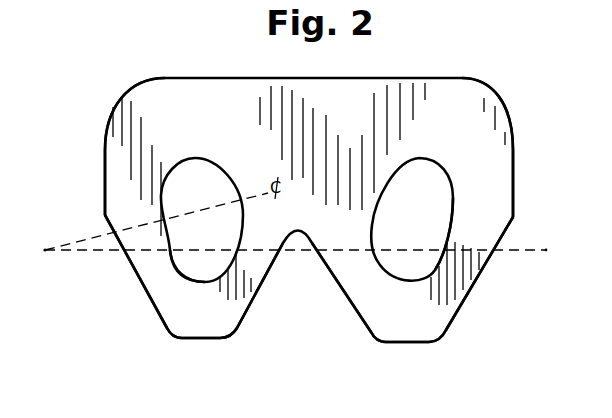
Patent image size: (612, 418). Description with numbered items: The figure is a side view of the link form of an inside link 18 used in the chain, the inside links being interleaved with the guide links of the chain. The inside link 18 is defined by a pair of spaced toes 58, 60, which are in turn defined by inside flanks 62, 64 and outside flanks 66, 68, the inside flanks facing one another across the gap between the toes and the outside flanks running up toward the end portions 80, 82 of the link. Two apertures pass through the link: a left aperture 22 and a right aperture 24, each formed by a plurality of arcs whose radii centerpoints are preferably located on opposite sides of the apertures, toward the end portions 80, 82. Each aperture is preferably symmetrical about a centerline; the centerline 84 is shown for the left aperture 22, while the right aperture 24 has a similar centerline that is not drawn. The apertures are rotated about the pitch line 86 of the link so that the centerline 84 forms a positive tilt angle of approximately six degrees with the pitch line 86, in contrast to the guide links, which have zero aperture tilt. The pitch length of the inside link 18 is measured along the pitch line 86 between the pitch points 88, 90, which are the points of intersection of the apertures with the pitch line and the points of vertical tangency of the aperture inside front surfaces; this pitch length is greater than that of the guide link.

The inside link 18 is at (366, 77).
The left aperture 22 is at (196, 150).
The right aperture 24 is at (445, 155).
The toe 58 is at (205, 327).
The toe 60 is at (413, 328).
The inside flank 62 is at (256, 298).
The inside flank 64 is at (351, 290).
The outside flank 66 is at (142, 290).
The outside flank 68 is at (479, 283).
The end portion 80 is at (116, 172).
The end portion 82 is at (497, 183).
The centerline 84 is at (96, 236).
The pitch line 86 is at (81, 252).
The pitch point 88 is at (168, 253).
The pitch point 90 is at (441, 262).